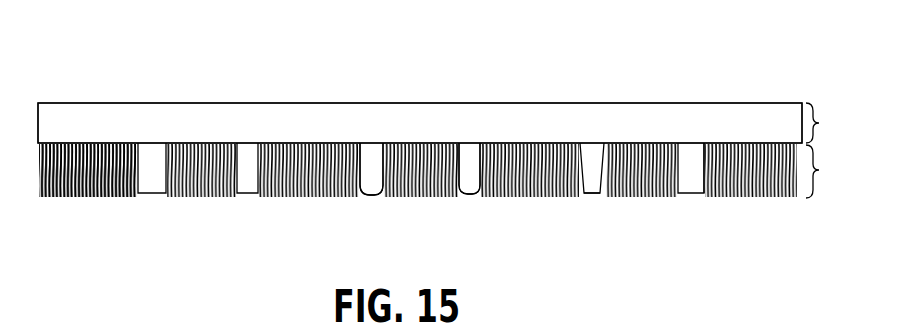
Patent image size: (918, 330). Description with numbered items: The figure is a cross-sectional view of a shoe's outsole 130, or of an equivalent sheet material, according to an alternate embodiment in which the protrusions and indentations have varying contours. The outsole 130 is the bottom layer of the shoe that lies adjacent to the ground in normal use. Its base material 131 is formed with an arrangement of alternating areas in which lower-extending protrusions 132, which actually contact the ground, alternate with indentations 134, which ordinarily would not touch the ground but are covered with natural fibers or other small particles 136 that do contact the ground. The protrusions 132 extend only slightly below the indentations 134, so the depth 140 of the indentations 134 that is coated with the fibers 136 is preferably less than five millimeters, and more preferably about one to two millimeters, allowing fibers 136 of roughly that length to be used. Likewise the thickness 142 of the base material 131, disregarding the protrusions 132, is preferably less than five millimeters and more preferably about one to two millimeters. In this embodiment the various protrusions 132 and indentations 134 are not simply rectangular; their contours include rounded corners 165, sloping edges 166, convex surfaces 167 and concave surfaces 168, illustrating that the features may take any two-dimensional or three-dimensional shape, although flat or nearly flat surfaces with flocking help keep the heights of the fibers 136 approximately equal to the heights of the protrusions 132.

The outsole 130 is at (402, 80).
The base material 131 is at (720, 128).
The protrusions 132 is at (380, 192).
The indentations 134 is at (284, 143).
The fibers 136 is at (94, 197).
The depth 140 is at (819, 170).
The thickness 142 is at (820, 123).
The rounded corners 165 is at (461, 143).
The sloping edges 166 is at (705, 158).
The convex surfaces 167 is at (473, 190).
The concave surfaces 168 is at (592, 188).